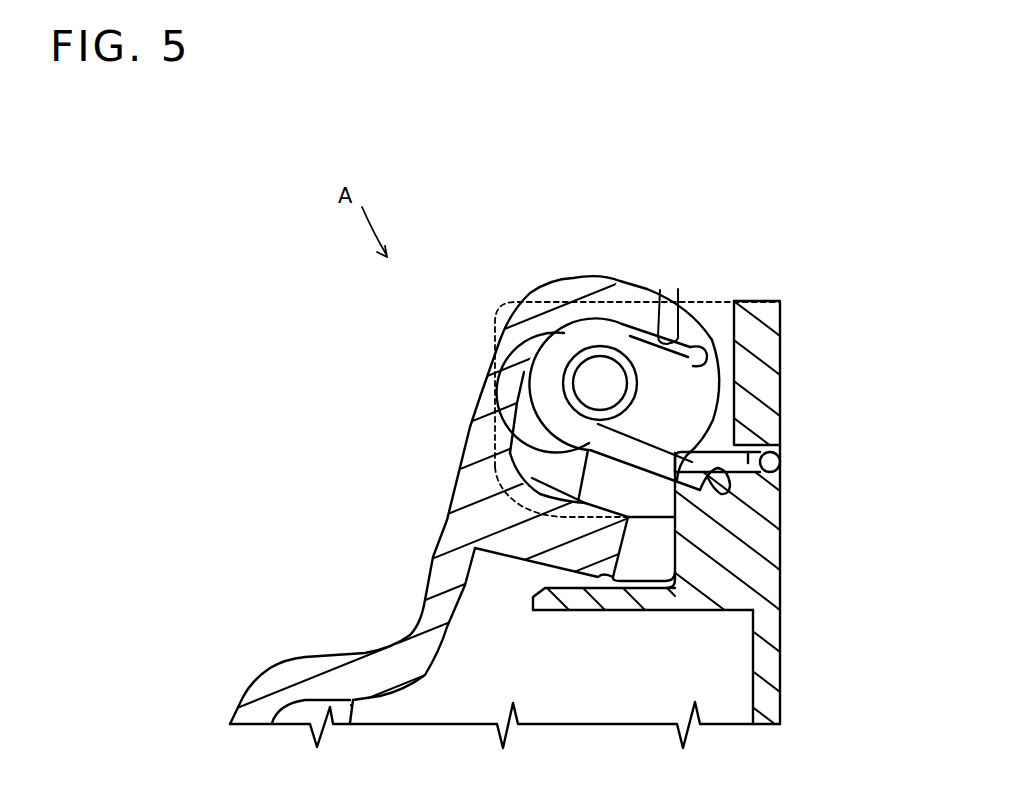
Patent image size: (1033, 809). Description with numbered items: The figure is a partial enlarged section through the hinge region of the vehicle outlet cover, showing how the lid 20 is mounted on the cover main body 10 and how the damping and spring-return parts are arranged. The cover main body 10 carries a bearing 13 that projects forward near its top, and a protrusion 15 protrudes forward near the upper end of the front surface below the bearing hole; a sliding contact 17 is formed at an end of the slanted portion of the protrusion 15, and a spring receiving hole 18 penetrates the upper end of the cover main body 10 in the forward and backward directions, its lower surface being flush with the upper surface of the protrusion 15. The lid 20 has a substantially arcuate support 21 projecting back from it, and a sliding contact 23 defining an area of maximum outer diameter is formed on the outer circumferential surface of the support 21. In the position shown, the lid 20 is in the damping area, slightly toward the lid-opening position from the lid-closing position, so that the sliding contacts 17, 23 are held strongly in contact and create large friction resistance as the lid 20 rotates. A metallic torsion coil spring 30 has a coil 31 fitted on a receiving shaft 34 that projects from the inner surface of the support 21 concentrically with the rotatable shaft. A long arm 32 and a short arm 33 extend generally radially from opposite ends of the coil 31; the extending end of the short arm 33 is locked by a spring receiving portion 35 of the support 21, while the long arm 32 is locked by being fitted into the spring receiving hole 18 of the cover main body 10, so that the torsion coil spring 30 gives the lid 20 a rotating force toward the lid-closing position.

The cover main body 10 is at (770, 633).
The bearing 13 is at (490, 393).
The protrusion 15 is at (697, 552).
The sliding contact 17 is at (700, 425).
The spring receiving hole 18 is at (718, 472).
The lid 20 is at (383, 670).
The support 21 is at (700, 388).
The sliding contact 23 is at (717, 505).
The torsion coil spring 30 is at (624, 314).
The coil 31 is at (562, 346).
The long arm 32 is at (746, 440).
The short arm 33 is at (660, 347).
The receiving shaft 34 is at (590, 390).
The spring receiving portion 35 is at (700, 347).